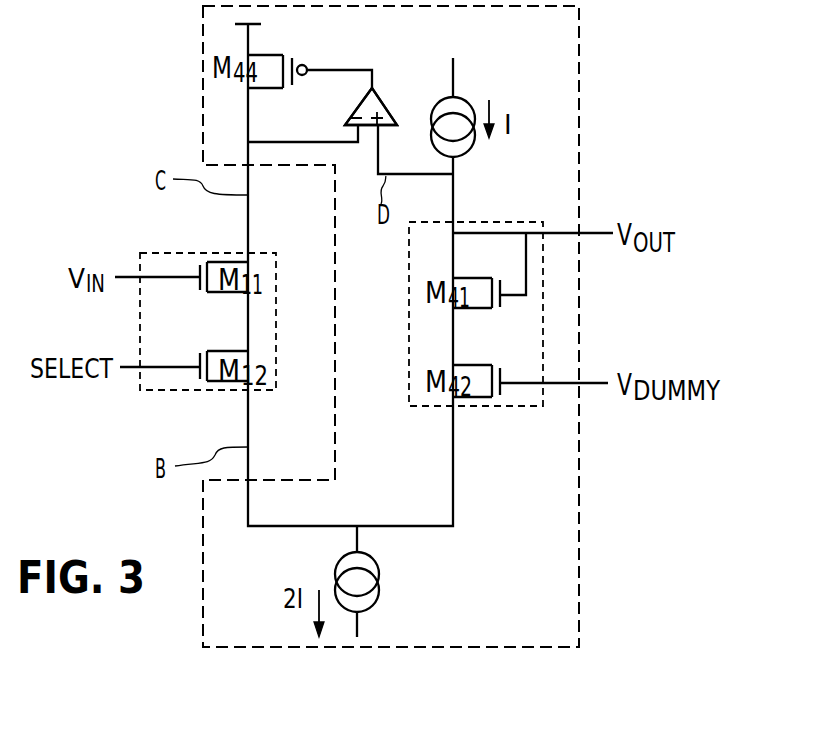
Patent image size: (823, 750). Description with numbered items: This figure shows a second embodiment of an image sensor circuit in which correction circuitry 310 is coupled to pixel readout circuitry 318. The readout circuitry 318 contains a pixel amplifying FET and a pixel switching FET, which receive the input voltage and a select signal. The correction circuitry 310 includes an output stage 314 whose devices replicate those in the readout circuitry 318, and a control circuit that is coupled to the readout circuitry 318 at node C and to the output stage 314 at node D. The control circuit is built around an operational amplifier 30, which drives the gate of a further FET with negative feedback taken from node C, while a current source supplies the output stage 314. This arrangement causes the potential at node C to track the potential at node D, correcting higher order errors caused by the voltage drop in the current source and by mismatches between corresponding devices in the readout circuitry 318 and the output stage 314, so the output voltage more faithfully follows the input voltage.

The correction circuitry 310 is at (586, 541).
The readout circuitry 318 is at (152, 253).
The output stage 314 is at (478, 408).
The operational amplifier 30 is at (376, 97).